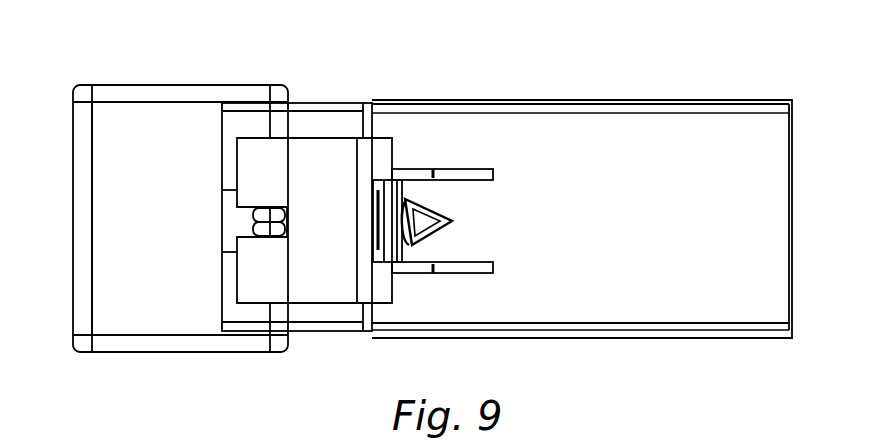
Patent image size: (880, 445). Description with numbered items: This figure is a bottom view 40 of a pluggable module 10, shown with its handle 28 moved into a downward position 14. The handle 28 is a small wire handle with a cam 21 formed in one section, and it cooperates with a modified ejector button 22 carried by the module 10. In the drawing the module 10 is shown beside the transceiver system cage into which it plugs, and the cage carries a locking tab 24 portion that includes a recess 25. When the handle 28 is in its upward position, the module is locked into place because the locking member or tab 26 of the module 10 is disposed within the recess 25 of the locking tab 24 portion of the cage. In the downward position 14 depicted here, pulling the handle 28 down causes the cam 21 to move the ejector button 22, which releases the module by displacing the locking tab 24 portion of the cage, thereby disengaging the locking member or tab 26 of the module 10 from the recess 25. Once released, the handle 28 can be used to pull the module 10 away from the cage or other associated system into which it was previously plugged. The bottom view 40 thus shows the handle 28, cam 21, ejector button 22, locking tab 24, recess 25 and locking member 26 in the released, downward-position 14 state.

The downward position 14 is at (60, 92).
The handle 28 is at (92, 244).
The pluggable module 10 is at (343, 318).
The ejector button 22 is at (312, 150).
The cam 21 is at (273, 232).
The locking tab 24 is at (405, 185).
The locking member or tab 26 is at (410, 203).
The recess 25 is at (443, 218).
The bottom view 40 is at (704, 346).